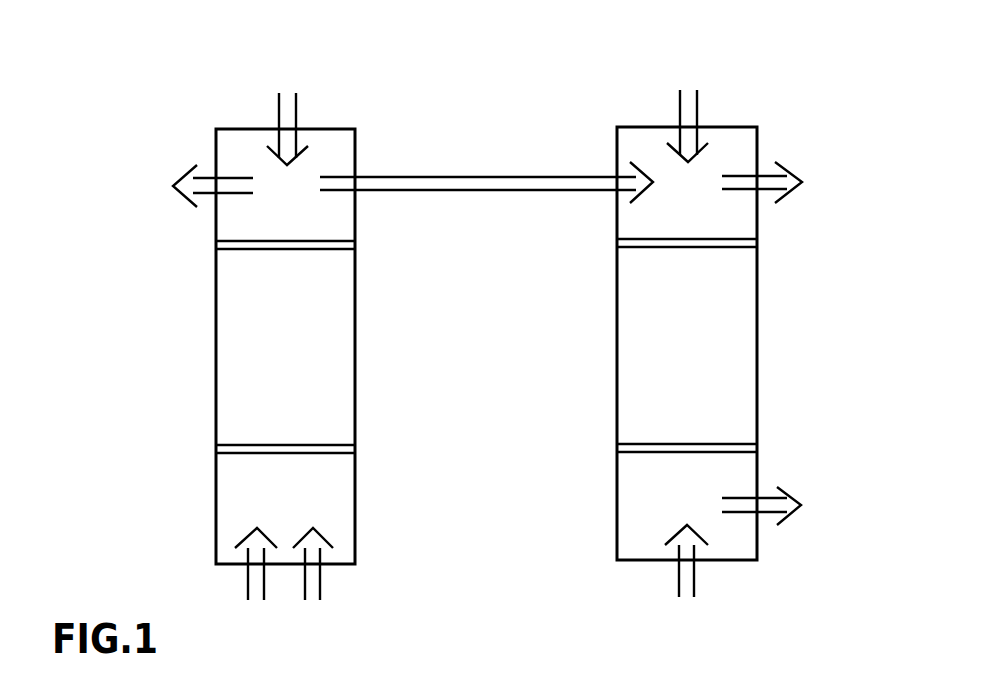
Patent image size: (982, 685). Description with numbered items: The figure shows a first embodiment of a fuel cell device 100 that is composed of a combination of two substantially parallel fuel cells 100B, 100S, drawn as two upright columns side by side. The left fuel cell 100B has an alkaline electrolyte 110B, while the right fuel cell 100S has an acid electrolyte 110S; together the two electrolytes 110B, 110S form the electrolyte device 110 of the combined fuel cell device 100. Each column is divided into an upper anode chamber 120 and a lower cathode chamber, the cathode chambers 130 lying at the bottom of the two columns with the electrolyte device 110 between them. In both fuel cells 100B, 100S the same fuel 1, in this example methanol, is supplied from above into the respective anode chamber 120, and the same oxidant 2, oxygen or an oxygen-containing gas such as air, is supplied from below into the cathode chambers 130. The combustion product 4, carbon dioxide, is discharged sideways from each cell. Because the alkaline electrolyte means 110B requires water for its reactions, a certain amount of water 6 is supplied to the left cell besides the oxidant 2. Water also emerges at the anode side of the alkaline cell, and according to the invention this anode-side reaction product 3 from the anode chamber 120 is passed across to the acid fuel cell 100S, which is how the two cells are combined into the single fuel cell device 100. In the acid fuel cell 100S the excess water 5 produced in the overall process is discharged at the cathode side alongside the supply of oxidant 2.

The fuel cell device 100 is at (519, 66).
The alkaline fuel cell 100B is at (170, 105).
The acid fuel cell 100S is at (797, 99).
The alkaline electrolyte 110B is at (257, 357).
The acid electrolyte 110S is at (656, 356).
The electrolyte device 110 is at (602, 291).
The anode chamber 120 is at (602, 224).
The cathode chambers 130 is at (602, 504).
The fuel 1 is at (487, 110).
The oxidant 2 is at (500, 581).
The reaction product 3 is at (486, 172).
The combustion product 4 is at (488, 184).
The excess water 5 is at (773, 506).
The water 6 is at (256, 583).